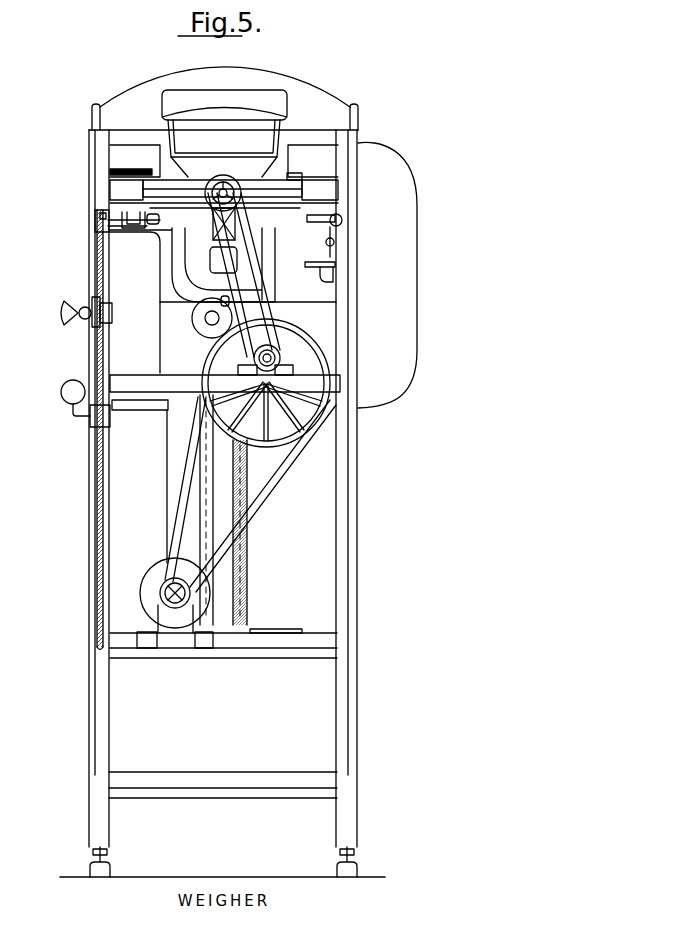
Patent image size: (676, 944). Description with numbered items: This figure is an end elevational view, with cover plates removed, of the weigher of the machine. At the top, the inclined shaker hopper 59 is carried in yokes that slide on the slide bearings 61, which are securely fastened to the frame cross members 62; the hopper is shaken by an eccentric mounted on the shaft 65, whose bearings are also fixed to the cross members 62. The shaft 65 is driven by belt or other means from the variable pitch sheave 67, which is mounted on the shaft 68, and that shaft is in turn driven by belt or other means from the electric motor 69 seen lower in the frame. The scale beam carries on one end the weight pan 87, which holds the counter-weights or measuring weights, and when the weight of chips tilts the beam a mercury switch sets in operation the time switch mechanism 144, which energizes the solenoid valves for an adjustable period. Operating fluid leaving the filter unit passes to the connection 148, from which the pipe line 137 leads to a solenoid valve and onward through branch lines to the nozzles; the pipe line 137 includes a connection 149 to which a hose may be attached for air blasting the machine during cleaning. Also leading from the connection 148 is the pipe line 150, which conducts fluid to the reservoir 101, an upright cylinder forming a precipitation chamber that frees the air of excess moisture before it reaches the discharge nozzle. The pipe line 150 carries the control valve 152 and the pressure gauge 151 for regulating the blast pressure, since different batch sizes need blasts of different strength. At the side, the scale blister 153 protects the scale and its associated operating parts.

The shaker hopper 59 is at (277, 157).
The slide bearings 61 is at (194, 186).
The frame cross members 62 is at (122, 188).
The shaft 65 is at (225, 190).
The variable pitch sheave 67 is at (278, 343).
The shaft 68 is at (282, 362).
The electric motor 69 is at (142, 584).
The weight pan 87 is at (308, 265).
The reservoir 101 is at (243, 472).
The pipe line 137 is at (152, 226).
The time switch mechanism 144 is at (120, 353).
The connection 148 is at (96, 218).
The connection 149 is at (134, 229).
The pipe line 150 is at (100, 270).
The pressure gauge 151 is at (63, 392).
The control valve 152 is at (82, 320).
The scale blister 153 is at (408, 243).